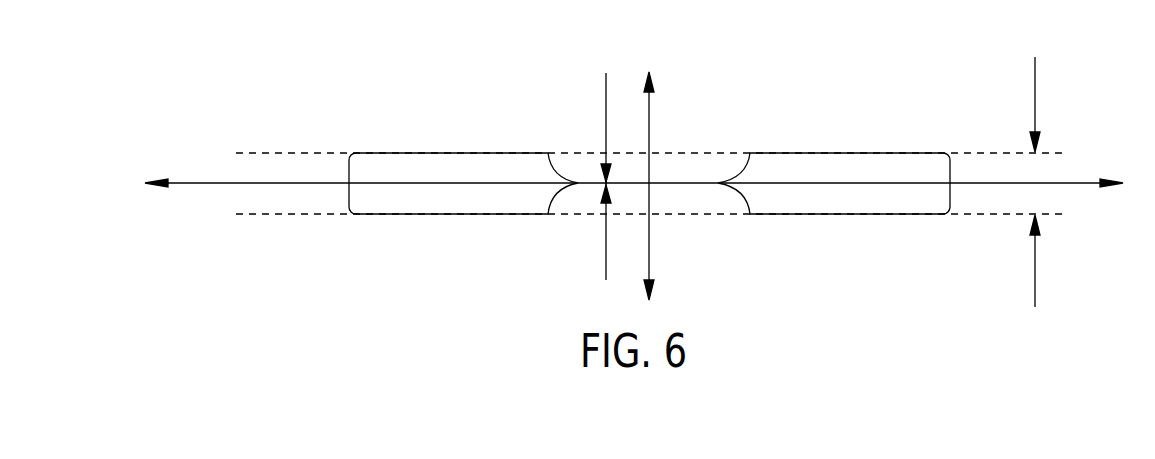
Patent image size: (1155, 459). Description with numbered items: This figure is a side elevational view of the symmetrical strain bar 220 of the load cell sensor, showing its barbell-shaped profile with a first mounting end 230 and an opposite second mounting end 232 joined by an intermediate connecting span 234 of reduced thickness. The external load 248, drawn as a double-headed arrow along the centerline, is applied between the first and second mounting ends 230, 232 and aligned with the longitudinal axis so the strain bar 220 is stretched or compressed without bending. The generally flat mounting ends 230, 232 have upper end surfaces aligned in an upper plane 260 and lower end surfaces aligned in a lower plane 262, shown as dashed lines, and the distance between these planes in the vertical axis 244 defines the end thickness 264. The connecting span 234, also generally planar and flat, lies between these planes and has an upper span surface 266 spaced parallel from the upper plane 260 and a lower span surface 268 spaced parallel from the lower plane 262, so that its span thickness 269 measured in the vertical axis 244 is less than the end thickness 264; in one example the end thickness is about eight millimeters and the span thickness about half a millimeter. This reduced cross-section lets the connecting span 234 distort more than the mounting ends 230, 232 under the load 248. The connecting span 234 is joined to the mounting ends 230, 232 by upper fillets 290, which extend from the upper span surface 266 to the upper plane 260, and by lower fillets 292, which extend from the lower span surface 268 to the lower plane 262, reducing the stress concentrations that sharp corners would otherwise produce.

The symmetrical strain bar 220 is at (441, 71).
The first mounting end 230 is at (375, 152).
The second mounting end 232 is at (875, 152).
The connecting span 234 is at (665, 183).
The vertical axis 244 is at (645, 92).
The load 248 is at (192, 182).
The upper plane 260 is at (990, 150).
The lower plane 262 is at (992, 215).
The end thickness 264 is at (1035, 90).
The upper span surface 266 is at (699, 163).
The lower span surface 268 is at (692, 208).
The span thickness 269 is at (606, 88).
The upper fillets 290 is at (561, 150).
The lower fillets 292 is at (561, 217).